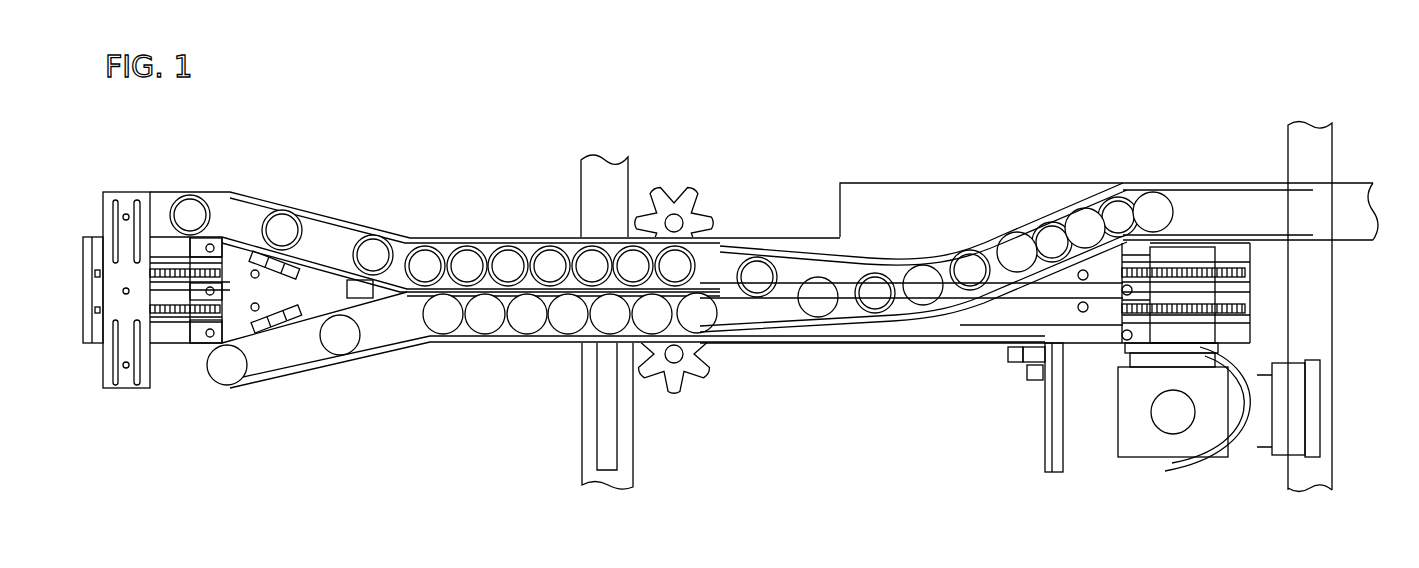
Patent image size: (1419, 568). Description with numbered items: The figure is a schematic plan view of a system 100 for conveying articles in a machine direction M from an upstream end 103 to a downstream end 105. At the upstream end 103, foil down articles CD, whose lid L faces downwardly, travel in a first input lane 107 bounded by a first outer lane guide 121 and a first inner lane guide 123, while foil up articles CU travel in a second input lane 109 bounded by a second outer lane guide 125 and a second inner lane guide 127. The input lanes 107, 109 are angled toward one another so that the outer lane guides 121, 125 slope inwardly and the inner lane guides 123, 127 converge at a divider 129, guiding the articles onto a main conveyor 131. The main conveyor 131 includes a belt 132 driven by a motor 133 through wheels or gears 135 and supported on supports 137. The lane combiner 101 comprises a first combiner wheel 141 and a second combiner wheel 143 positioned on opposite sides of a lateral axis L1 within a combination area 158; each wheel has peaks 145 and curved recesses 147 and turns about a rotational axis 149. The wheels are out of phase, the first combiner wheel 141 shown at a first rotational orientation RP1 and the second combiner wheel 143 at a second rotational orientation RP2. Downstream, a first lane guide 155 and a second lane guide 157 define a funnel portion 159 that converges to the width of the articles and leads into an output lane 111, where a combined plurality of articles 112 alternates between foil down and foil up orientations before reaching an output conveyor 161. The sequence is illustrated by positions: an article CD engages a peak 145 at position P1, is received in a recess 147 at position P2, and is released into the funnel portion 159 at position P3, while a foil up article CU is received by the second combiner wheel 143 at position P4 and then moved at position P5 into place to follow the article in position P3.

The system and method for conveying articles 100 is at (938, 90).
The lane combiner 101 is at (628, 140).
The upstream end 103 is at (88, 208).
The downstream end 105 is at (1382, 208).
The first input lane 107 is at (197, 190).
The second input lane 109 is at (195, 394).
The output lane 111 is at (1000, 222).
The combined plurality of articles 112 is at (1060, 220).
The first outer lane guide 121 is at (258, 198).
The first inner lane guide 123 is at (322, 265).
The second outer lane guide 125 is at (258, 382).
The second inner lane guide 127 is at (282, 330).
The divider 129 is at (423, 293).
The main conveyor 131 is at (868, 352).
The belt 132 is at (1237, 330).
The motor 133 is at (1212, 475).
The wheels or gears 135 is at (170, 318).
The supports 137 is at (807, 243).
The first combiner wheel 141 is at (668, 240).
The second combiner wheel 143 is at (657, 365).
The peaks 145 is at (690, 200).
The recesses 147 is at (685, 330).
The rotational axis 149 is at (700, 205).
The first lane guide 155 is at (938, 255).
The second lane guide 157 is at (943, 310).
The combination area 158 is at (783, 247).
The funnel portion 159 is at (770, 310).
The output conveyor 161 is at (927, 183).
The foil down articles CD is at (282, 228).
The foil up articles CU is at (340, 338).
The lid L is at (445, 322).
The lateral axis L1 is at (674, 463).
The machine direction M is at (835, 87).
The position P1 is at (670, 265).
The position P2 is at (635, 267).
The position P3 is at (757, 277).
The position P4 is at (653, 312).
The position P5 is at (700, 320).
The first rotational orientation RP1 is at (665, 215).
The second rotational orientation RP2 is at (665, 375).